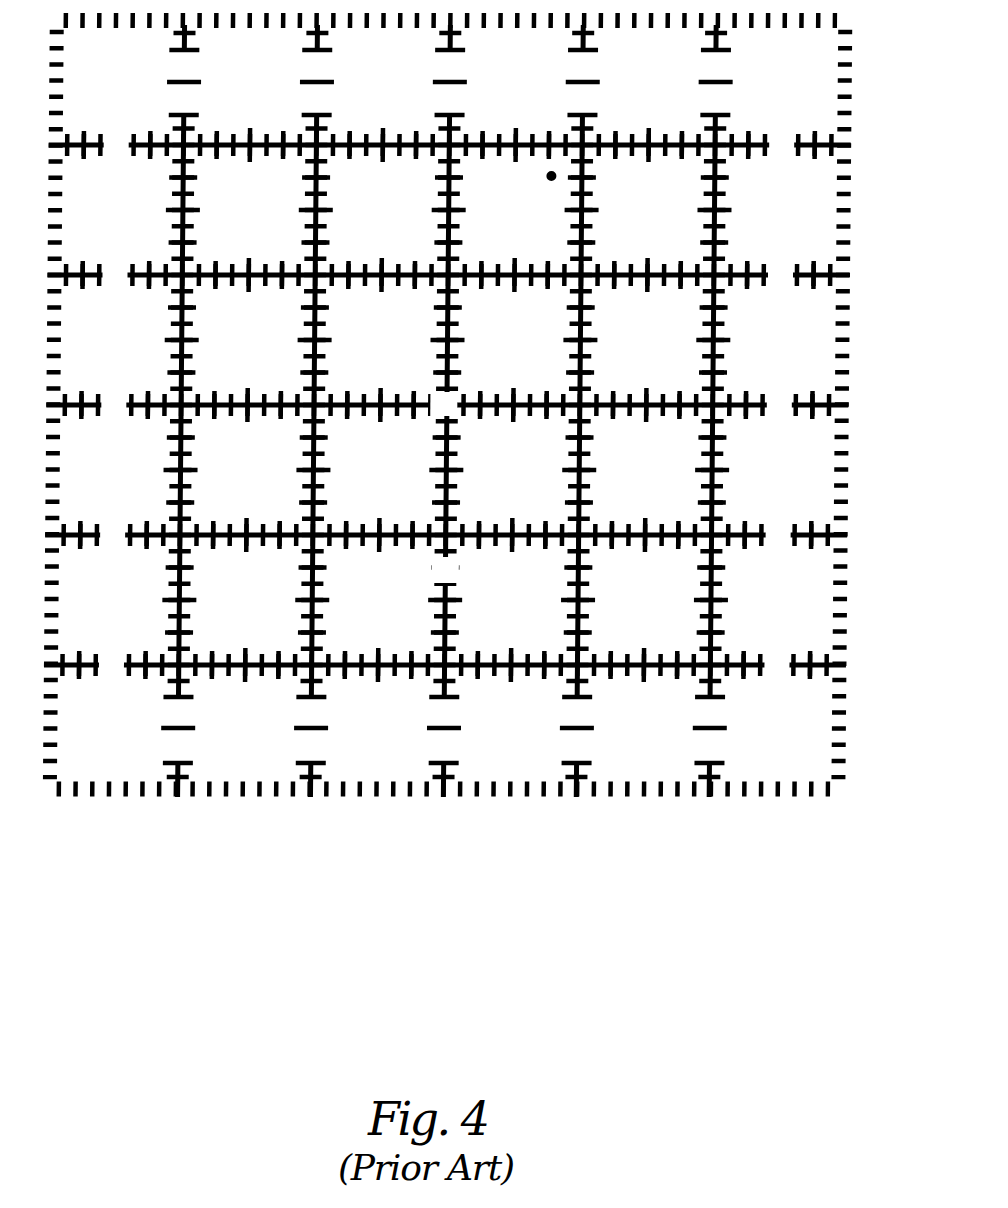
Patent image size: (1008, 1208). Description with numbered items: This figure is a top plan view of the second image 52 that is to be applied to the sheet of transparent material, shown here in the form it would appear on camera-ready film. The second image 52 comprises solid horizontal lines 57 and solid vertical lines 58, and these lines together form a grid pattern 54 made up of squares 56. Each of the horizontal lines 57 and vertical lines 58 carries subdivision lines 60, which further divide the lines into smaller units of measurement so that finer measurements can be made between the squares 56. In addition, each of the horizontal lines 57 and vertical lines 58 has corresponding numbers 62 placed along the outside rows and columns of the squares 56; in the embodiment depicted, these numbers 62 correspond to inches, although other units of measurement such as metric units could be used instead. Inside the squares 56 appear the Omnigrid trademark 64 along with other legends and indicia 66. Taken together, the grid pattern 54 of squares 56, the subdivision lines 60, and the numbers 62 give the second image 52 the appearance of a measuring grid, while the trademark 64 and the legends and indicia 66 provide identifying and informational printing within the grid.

The second image 52 is at (482, 458).
The grid pattern 54 is at (745, 690).
The squares 56 is at (667, 617).
The horizontal lines 57 is at (447, 405).
The vertical lines 58 is at (762, 496).
The subdivision lines 60 is at (843, 392).
The numbers 62 is at (722, 68).
The Omnigrid trademark 64 is at (348, 181).
The legends and indicia 66 is at (536, 245).